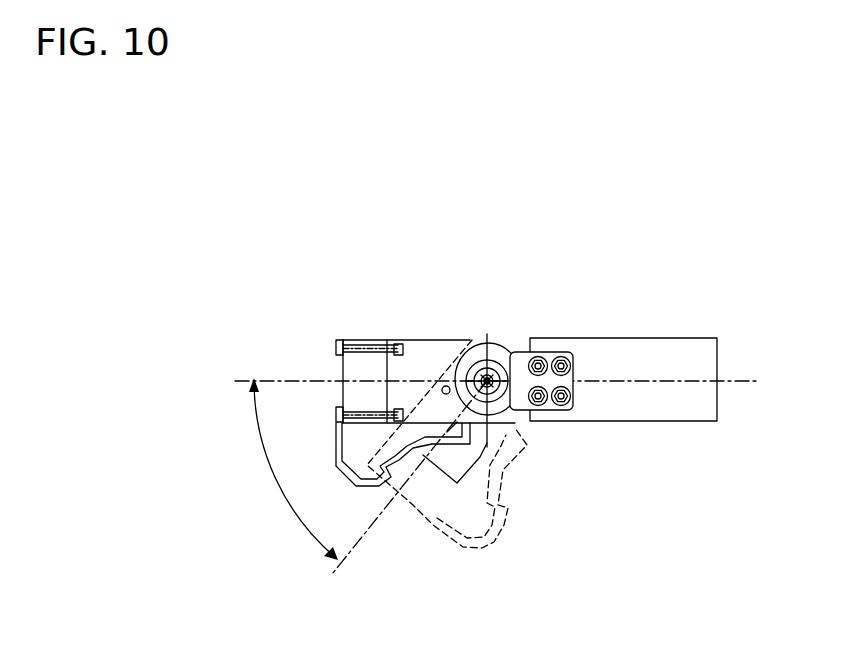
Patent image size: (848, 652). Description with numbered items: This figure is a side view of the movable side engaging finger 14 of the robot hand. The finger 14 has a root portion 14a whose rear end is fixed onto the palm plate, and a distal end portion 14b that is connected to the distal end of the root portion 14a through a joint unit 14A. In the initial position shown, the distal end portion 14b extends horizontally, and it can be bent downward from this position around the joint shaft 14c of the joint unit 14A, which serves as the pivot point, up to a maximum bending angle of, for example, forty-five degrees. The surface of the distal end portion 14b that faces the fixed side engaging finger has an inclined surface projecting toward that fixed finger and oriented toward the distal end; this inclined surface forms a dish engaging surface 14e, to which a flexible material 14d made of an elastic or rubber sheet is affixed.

The movable side engaging finger 14 is at (566, 308).
The joint unit 14A is at (489, 324).
The root portion 14a is at (668, 347).
The distal end portion 14b is at (353, 368).
The joint shaft 14c is at (488, 382).
The flexible material 14d is at (340, 445).
The dish engaging surface 14e is at (397, 462).